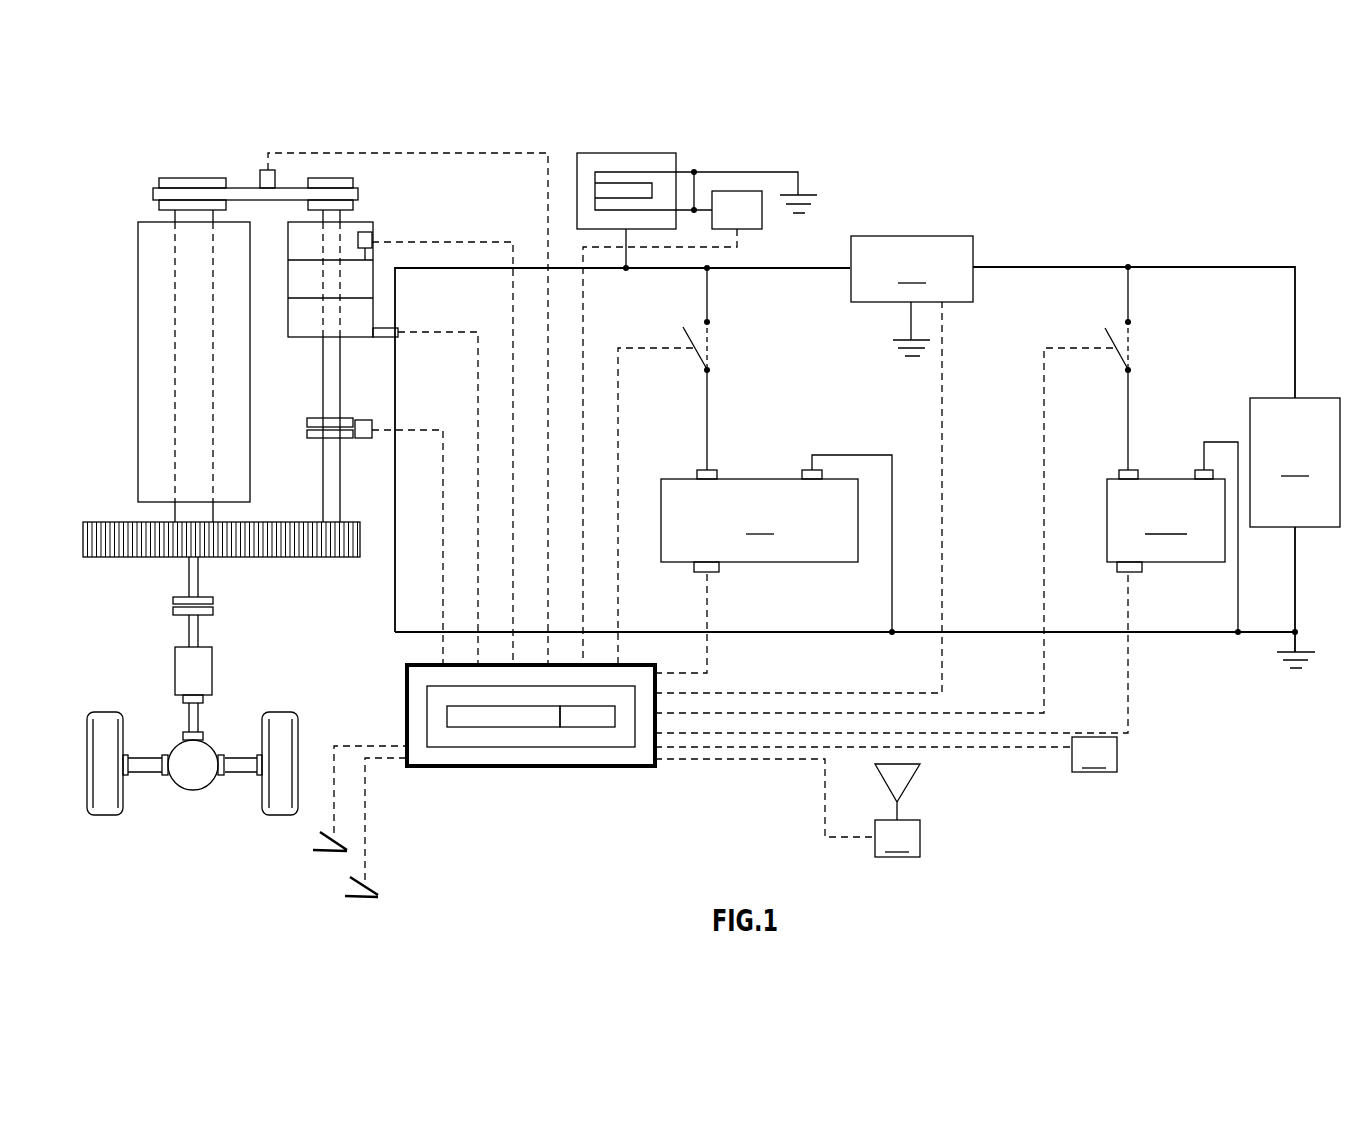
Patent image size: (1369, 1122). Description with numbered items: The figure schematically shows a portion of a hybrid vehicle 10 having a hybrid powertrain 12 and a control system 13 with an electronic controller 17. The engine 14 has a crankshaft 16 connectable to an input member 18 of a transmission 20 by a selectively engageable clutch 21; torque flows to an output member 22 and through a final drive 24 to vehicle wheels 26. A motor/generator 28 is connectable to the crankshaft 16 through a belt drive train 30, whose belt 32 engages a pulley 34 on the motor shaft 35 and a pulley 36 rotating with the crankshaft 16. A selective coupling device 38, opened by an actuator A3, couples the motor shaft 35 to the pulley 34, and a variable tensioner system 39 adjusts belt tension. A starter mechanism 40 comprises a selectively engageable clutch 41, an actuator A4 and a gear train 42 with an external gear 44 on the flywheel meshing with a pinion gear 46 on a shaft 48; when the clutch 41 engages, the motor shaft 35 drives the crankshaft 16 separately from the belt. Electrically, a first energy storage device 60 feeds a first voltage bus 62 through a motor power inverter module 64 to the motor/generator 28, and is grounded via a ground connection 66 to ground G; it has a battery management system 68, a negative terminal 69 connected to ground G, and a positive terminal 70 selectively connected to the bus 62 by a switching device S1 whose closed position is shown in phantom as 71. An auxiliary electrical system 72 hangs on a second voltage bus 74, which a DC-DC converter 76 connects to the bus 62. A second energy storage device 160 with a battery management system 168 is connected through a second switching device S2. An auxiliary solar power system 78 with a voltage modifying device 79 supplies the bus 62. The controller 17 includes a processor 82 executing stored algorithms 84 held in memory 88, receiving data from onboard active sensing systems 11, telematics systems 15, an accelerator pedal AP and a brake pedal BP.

The hybrid vehicle 10 is at (115, 168).
The hybrid powertrain 12 is at (907, 180).
The engine 14 is at (138, 275).
The crankshaft 16 is at (173, 518).
The input member 18 is at (200, 633).
The transmission 20 is at (213, 673).
The selectively engageable clutch 21 is at (165, 618).
The output member 22 is at (187, 717).
The final drive 24 is at (192, 792).
The vehicle wheels 26 is at (107, 712).
The motor/generator 28 is at (373, 282).
The belt drive train 30 is at (220, 147).
The belt 32 is at (240, 188).
The pulley 34 is at (323, 178).
The motor shaft 35 is at (342, 218).
The pulley 36 is at (170, 178).
The selective coupling device 38 is at (369, 226).
The variable tensioner system 39 is at (268, 170).
The starter mechanism 40 is at (290, 480).
The selectively engageable clutch 41 is at (343, 440).
The gear train 42 is at (97, 562).
The external gear 44 is at (150, 553).
The pinion gear 46 is at (333, 560).
The shaft 48 is at (340, 508).
The first energy storage device 60 is at (771, 534).
The first voltage bus 62 is at (795, 268).
The motor power inverter module 64 is at (307, 337).
The ground connection 66 is at (1163, 632).
The battery management system 68 is at (702, 572).
The negative terminal 69 is at (808, 470).
The positive terminal 70 is at (703, 470).
The closed position 71 is at (708, 340).
The auxiliary electrical system 72 is at (1295, 462).
The second voltage bus 74 is at (1043, 267).
The DC-DC converter 76 is at (912, 296).
The auxiliary solar power system 78 is at (793, 162).
The voltage modifying device 79 is at (740, 230).
The processor 82 is at (575, 747).
The stored algorithms 84 is at (502, 728).
The memory 88 is at (605, 728).
The second energy storage device 160 is at (1121, 470).
The battery management system 168 is at (1120, 572).
The onboard active sensing systems 11 is at (1094, 754).
The control system 13 is at (662, 770).
The telematics systems 15 is at (897, 810).
The electronic controller 17 is at (432, 767).
The actuator A3 is at (373, 240).
The actuator A4 is at (363, 420).
The switching device S1 is at (700, 360).
The second switching device S2 is at (1120, 360).
The brake pedal BP is at (330, 853).
The accelerator pedal AP is at (365, 898).
The ground G is at (1302, 652).